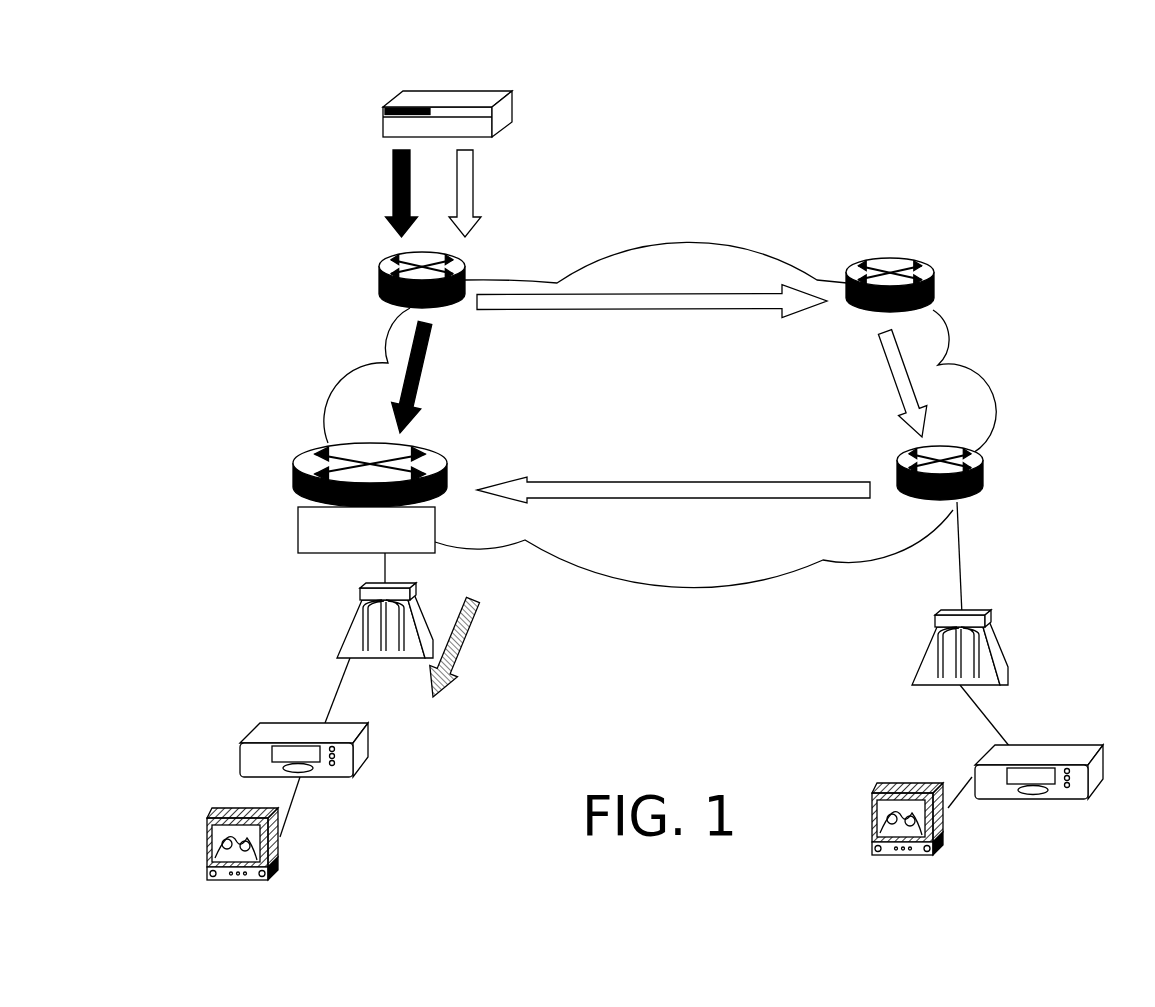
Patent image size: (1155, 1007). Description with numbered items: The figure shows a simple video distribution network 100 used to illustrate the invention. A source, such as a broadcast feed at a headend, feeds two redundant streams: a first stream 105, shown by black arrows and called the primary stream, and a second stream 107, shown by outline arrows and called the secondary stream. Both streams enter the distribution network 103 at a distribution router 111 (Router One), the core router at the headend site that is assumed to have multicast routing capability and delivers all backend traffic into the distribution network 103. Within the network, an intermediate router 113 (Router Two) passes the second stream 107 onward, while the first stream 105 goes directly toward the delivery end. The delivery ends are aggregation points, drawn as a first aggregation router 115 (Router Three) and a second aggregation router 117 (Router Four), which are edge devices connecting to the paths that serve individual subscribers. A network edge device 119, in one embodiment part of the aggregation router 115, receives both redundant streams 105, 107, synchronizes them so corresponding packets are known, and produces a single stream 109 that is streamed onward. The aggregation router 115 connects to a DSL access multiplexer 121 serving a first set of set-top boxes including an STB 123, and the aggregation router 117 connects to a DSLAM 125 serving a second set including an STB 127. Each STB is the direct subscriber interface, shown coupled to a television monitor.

The network 100 is at (975, 158).
The distribution network 103 is at (512, 112).
The first stream 105 is at (393, 197).
The second stream 107 is at (473, 197).
The single stream 109 is at (470, 643).
The distribution router 111 is at (463, 270).
The intermediate router 113 is at (928, 262).
The first aggregation router 115 is at (447, 468).
The second aggregation router 117 is at (982, 467).
The network edge device 119 is at (298, 522).
The DSL access multiplexer 121 is at (370, 660).
The set-top box 123 is at (240, 760).
The DSL access multiplexer 125 is at (998, 642).
The set-top box 127 is at (1083, 745).